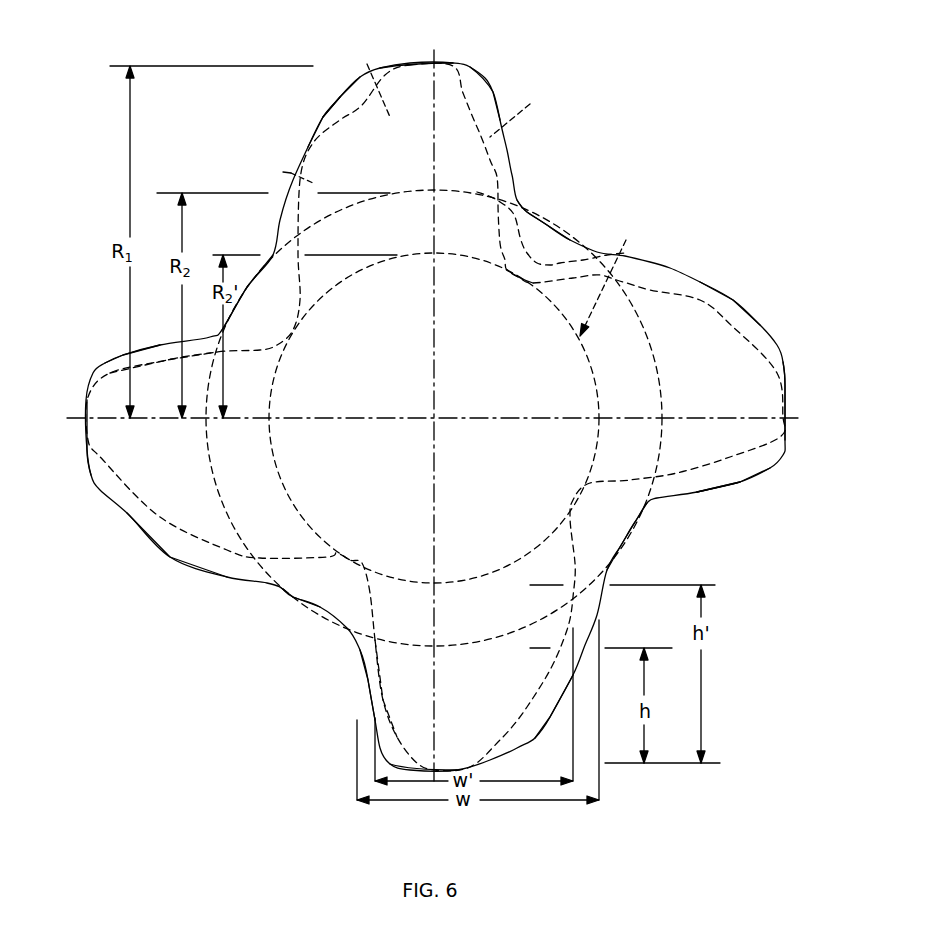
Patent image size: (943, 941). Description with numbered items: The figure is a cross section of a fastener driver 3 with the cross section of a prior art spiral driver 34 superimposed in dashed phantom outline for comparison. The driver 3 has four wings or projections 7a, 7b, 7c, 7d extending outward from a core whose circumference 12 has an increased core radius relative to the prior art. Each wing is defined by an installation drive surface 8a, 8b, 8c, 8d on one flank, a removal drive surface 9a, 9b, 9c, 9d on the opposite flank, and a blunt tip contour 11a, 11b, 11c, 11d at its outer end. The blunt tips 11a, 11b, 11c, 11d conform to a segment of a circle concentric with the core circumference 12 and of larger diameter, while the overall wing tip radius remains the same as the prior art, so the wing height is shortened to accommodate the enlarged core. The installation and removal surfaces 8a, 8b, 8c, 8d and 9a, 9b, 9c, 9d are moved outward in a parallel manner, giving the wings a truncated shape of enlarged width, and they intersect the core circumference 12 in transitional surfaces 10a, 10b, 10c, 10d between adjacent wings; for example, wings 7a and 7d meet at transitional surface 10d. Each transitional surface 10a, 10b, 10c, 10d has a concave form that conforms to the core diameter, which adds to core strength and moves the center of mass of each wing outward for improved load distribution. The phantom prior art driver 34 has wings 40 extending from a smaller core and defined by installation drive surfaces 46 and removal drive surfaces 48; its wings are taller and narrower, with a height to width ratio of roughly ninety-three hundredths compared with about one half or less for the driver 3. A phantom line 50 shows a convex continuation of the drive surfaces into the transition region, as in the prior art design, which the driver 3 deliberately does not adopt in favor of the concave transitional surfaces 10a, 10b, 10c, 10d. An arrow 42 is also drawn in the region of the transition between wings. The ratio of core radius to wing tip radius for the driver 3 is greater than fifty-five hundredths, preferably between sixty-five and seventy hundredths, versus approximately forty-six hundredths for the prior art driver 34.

The driver 3 is at (606, 121).
The wing 7a is at (343, 107).
The wing 7b is at (165, 360).
The wing 7c is at (377, 712).
The wing 7d is at (700, 485).
The installation drive surface 8a is at (492, 93).
The installation drive surface 8b is at (123, 357).
The installation drive surface 8c is at (360, 670).
The installation drive surface 8d is at (740, 480).
The removal drive surface 9a is at (315, 128).
The removal drive surface 9b is at (170, 557).
The removal drive surface 9c is at (537, 738).
The removal drive surface 9d is at (740, 306).
The transitional surface 10a is at (256, 278).
The transitional surface 10b is at (297, 605).
The transitional surface 10c is at (617, 553).
The transitional surface 10d is at (545, 228).
The tip contour 11a is at (410, 63).
The tip contour 11b is at (93, 477).
The tip contour 11c is at (413, 770).
The tip contour 11d is at (786, 388).
The core circumference 12 is at (473, 192).
The prior art driver 34 is at (645, 283).
The wings 40 is at (371, 77).
The direction arrow 42 is at (608, 275).
The installation drive surfaces 46 is at (516, 108).
The removal drive surfaces 48 is at (285, 171).
The phantom line 50 is at (556, 266).